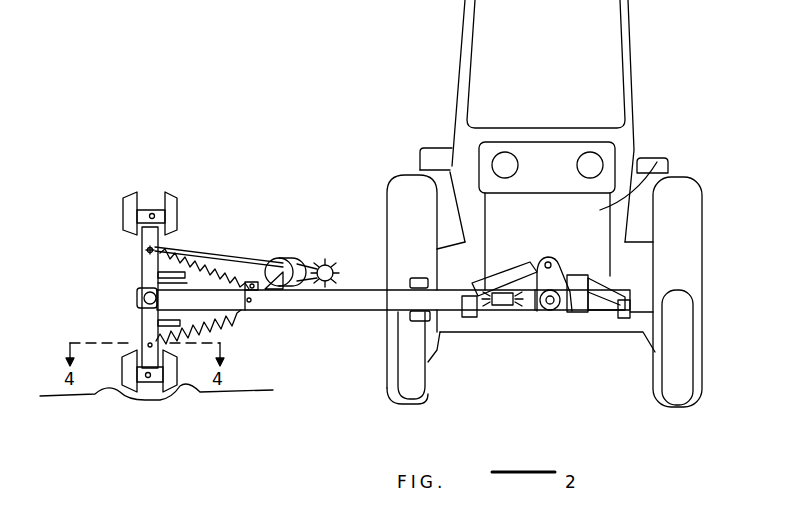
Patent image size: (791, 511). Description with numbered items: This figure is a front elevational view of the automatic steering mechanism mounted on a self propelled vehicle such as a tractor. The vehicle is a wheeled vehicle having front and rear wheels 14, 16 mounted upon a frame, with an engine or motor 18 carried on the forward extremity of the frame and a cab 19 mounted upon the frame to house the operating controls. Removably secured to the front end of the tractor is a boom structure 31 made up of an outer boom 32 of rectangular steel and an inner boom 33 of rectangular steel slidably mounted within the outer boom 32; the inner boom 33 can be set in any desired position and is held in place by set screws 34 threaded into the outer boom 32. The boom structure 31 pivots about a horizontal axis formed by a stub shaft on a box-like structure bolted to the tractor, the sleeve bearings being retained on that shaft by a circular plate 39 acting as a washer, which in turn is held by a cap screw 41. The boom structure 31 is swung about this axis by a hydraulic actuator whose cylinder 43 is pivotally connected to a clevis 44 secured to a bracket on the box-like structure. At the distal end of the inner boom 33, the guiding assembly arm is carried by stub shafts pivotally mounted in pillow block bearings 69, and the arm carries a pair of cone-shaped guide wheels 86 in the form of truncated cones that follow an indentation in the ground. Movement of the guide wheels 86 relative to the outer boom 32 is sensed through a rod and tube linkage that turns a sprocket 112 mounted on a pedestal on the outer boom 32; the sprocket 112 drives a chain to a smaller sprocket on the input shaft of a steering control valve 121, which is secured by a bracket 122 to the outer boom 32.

The cab 19 is at (473, 63).
The engine or motor 18 is at (657, 160).
The rear wheels 16 is at (397, 200).
The front wheels 14 is at (420, 373).
The boom structure 31 is at (372, 333).
The outer boom 32 is at (365, 300).
The inner boom 33 is at (208, 296).
The set screws 34 is at (261, 303).
The circular plate 39 is at (557, 312).
The cap screw 41 is at (549, 311).
The cylinder 43 is at (516, 270).
The clevis 44 is at (552, 275).
The pillow block bearings 69 is at (138, 292).
The cone-shaped guide wheels 86 is at (125, 213).
The sprocket 112 is at (287, 260).
The steering control valve 121 is at (323, 264).
The bracket 122 is at (345, 282).